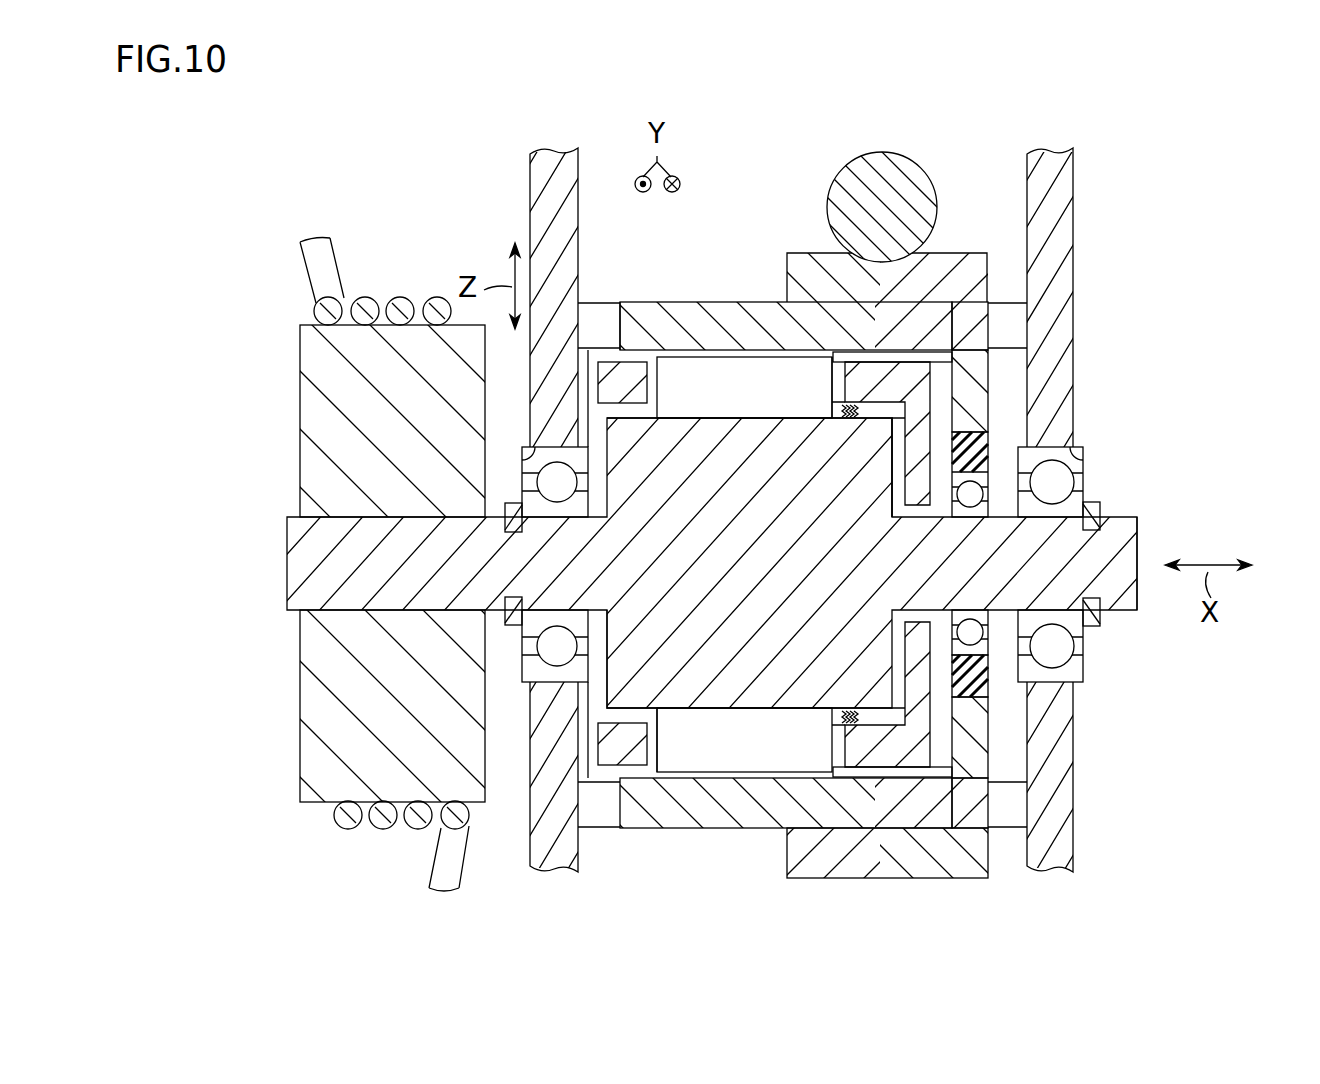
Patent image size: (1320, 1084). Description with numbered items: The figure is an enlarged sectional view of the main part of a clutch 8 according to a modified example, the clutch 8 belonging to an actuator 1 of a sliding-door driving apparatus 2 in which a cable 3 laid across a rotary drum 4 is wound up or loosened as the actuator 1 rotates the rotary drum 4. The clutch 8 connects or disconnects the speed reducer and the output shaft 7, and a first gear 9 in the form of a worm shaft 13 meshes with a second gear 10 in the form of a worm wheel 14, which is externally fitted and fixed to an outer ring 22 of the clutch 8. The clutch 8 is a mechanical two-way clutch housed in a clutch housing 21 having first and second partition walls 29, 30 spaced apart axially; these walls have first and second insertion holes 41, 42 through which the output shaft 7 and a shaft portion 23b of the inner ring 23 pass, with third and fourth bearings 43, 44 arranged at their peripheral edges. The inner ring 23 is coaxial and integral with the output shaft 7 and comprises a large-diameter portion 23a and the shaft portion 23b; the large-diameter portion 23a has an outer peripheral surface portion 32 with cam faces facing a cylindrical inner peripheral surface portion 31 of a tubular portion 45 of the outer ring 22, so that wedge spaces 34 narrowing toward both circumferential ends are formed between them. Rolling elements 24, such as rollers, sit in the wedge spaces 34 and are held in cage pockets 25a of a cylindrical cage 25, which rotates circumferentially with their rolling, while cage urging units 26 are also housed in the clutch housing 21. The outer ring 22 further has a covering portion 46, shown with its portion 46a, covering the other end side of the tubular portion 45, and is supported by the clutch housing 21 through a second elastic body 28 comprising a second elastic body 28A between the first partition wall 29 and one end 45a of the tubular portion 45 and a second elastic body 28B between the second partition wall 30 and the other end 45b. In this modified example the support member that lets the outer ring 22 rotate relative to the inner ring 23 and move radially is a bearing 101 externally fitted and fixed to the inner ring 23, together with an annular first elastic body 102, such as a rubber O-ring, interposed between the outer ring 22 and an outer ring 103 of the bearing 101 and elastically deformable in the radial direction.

The actuator 1 is at (540, 883).
The sliding-door driving apparatus 2 is at (988, 159).
The cable 3 is at (363, 300).
The rotary drum 4 is at (320, 712).
The output shaft 7 is at (292, 572).
The clutch 8 is at (690, 828).
The first gear 9 is at (962, 542).
The second gear 10 is at (660, 542).
The worm shaft 13 is at (908, 178).
The worm wheel 14 is at (976, 260).
The clutch housing 21 is at (660, 542).
The outer ring 22 is at (660, 542).
The inner ring 23 is at (1049, 514).
The large-diameter portion 23a is at (812, 497).
The shaft portion 23b is at (1035, 568).
The rolling elements 24 is at (735, 375).
The cage 25 is at (905, 752).
The cage pockets 25a is at (652, 390).
The cage urging units 26 is at (847, 412).
The second elastic body 28 is at (891, 516).
The second elastic body 28A is at (595, 322).
The second elastic body 28B is at (1012, 307).
The first partition wall 29 is at (540, 180).
The second partition wall 30 is at (1066, 238).
The inner peripheral surface portion 31 is at (653, 363).
The outer peripheral surface portion 32 is at (755, 377).
The wedge spaces 34 is at (653, 718).
The first insertion hole 41 is at (540, 477).
The second insertion hole 42 is at (1078, 458).
The third bearing 43 is at (540, 667).
The fourth bearing 44 is at (1077, 672).
The tubular portion 45 is at (883, 347).
The one end 45a is at (628, 325).
The other end 45b is at (978, 322).
The covering portion 46 is at (978, 400).
The rotor hub 46a is at (985, 406).
The bearing 101 is at (992, 617).
The first elastic body 102 is at (992, 688).
The outer ring 103 is at (982, 490).